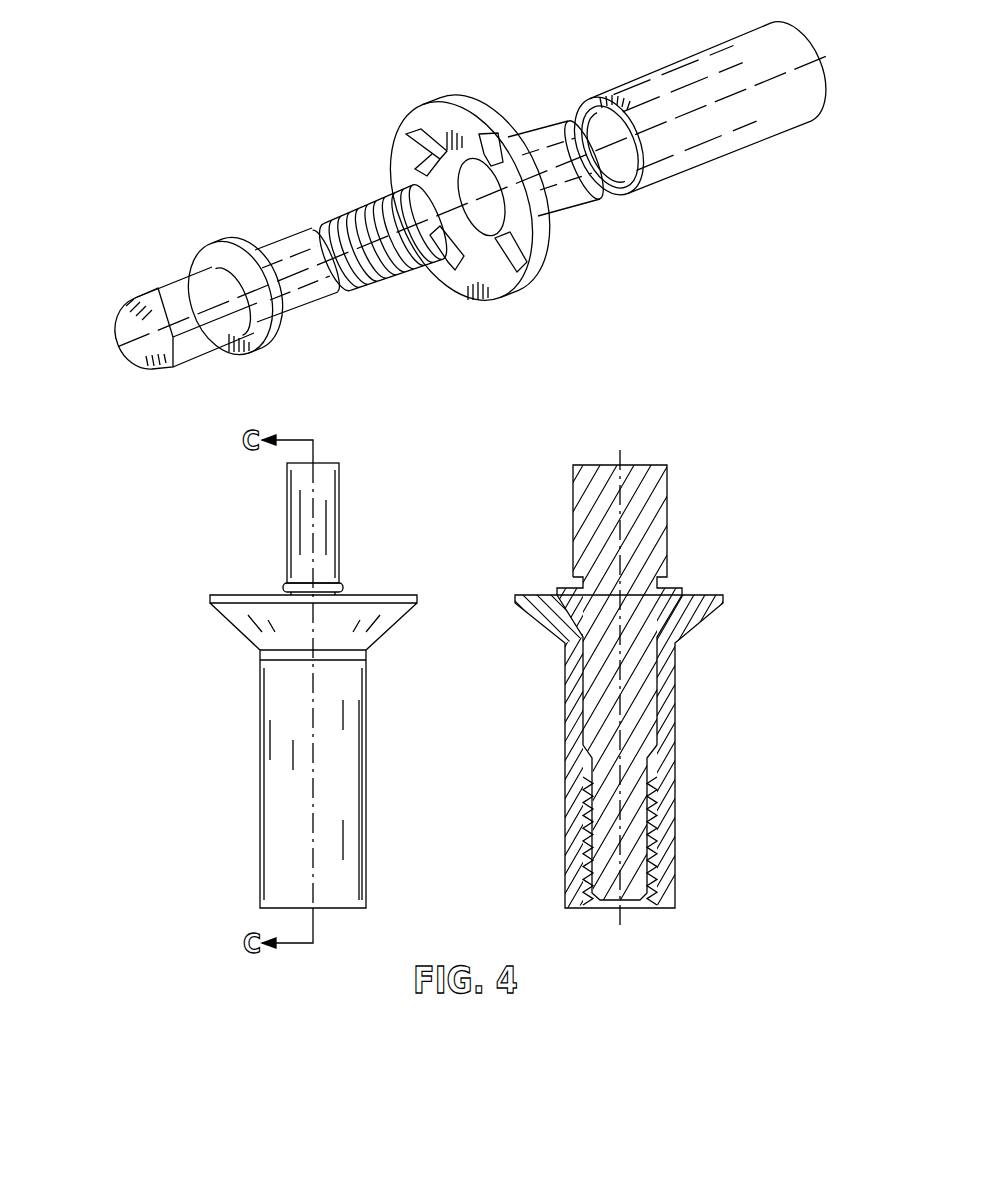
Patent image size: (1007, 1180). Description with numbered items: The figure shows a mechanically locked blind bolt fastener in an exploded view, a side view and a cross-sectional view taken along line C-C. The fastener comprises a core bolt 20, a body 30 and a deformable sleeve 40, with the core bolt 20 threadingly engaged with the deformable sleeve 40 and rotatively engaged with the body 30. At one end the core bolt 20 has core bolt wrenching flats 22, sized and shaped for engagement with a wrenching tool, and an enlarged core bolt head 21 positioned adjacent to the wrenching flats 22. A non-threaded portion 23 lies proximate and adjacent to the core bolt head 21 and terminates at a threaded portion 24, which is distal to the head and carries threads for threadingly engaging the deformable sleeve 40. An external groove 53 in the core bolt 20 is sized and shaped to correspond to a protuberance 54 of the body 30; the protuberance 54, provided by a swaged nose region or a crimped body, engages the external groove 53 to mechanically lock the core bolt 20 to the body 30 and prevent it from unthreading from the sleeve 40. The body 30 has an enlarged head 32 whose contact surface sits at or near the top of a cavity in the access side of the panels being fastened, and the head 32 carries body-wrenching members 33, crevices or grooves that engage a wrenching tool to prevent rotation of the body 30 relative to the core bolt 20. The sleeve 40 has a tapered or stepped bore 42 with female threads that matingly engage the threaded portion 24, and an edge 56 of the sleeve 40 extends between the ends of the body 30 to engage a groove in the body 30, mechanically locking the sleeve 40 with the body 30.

The core bolt 20 is at (128, 326).
The core bolt head 21 is at (222, 258).
The core bolt wrenching flats 22 is at (178, 312).
The non-threaded portion 23 is at (280, 235).
The threaded portion 24 is at (373, 197).
The body 30 is at (487, 181).
The head 32 is at (465, 115).
The body-wrenching members 33 is at (486, 158).
The deformable sleeve 40 is at (693, 142).
The bore 42 is at (623, 168).
The external groove 53 is at (353, 288).
The protuberance 54 is at (571, 118).
The edge 56 is at (642, 173).